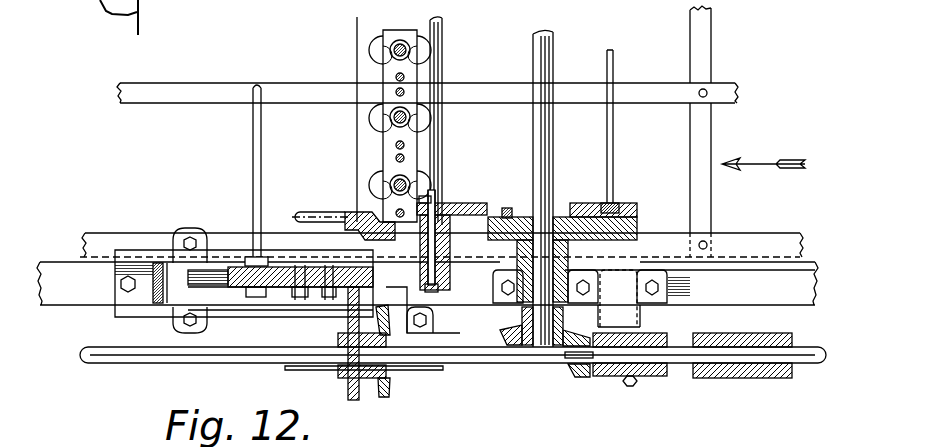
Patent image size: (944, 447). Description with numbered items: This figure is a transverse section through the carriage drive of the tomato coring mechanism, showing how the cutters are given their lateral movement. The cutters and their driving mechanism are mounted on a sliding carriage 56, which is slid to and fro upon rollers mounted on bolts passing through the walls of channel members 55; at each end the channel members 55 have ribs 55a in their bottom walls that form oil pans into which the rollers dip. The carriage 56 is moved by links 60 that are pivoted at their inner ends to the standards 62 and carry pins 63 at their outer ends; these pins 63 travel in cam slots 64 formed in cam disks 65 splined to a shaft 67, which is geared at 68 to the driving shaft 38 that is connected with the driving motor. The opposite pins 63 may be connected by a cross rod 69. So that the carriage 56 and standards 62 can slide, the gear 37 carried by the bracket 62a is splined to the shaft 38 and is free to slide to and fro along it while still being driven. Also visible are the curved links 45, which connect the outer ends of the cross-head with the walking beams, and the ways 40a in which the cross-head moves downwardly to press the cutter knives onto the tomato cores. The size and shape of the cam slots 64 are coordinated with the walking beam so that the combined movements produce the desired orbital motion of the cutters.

The gear 37 is at (390, 395).
The driving shaft 38 is at (127, 366).
The ways 40a is at (394, 304).
The curved links 45 is at (322, 213).
The channel members 55 is at (118, 319).
The ribs 55a is at (150, 292).
The sliding carriage 56 is at (224, 298).
The links 60 is at (452, 205).
The standards 62 is at (278, 262).
The bracket 62a is at (314, 294).
The pins 63 is at (618, 205).
The cam slots 64 is at (506, 216).
The cam disks 65 is at (635, 230).
The shaft 67 is at (532, 69).
The gearing 68 is at (574, 366).
The cross rod 69 is at (614, 160).